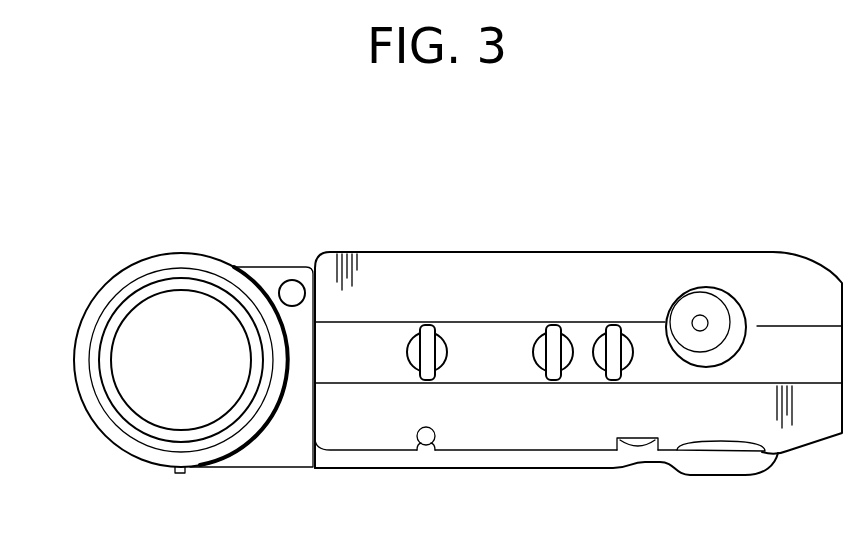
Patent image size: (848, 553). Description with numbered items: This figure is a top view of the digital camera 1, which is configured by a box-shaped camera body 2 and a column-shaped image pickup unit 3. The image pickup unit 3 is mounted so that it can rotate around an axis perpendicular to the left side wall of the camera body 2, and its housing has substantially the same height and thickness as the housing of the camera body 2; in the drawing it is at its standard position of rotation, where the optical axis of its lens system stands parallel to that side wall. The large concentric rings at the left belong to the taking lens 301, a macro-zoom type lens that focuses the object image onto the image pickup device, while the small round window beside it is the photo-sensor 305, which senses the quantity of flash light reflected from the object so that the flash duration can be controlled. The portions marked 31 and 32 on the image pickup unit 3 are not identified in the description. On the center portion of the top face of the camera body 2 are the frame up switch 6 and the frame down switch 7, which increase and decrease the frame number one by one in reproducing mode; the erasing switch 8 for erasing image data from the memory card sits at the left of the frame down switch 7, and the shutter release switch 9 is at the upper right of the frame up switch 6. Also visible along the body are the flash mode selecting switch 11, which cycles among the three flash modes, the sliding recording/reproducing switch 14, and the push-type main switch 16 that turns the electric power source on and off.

The digital camera 1 is at (463, 160).
The camera body 2 is at (597, 237).
The image pickup unit 3 is at (200, 244).
The taking lens 301 is at (145, 322).
The photo-sensor 305 is at (291, 281).
The lens ring 31 is at (153, 452).
The lens holder 32 is at (285, 450).
The frame up switch 6 is at (612, 332).
The frame down switch 7 is at (553, 332).
The erasing switch 8 is at (427, 332).
The shutter release switch 9 is at (697, 302).
The flash mode selecting switch 11 is at (425, 445).
The recording/reproducing switch 14 is at (728, 445).
The main switch 16 is at (640, 445).